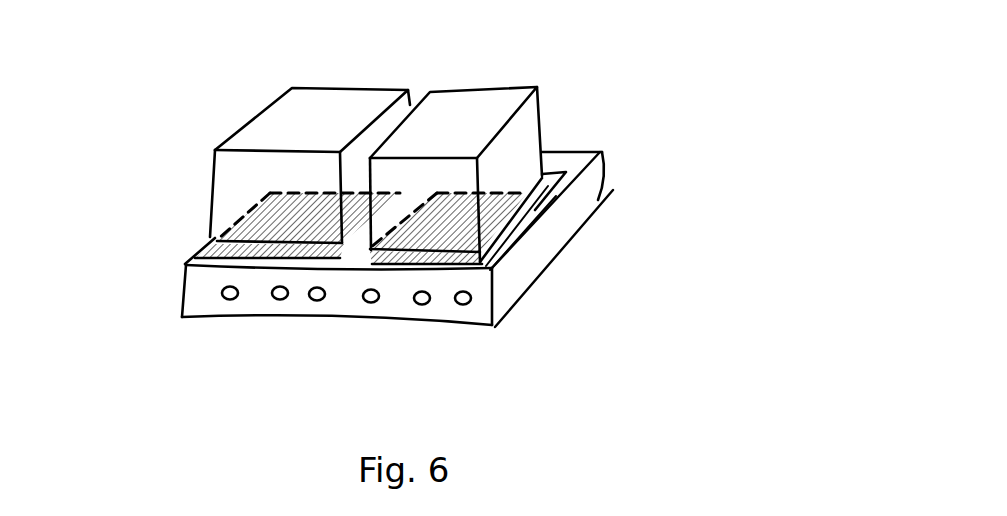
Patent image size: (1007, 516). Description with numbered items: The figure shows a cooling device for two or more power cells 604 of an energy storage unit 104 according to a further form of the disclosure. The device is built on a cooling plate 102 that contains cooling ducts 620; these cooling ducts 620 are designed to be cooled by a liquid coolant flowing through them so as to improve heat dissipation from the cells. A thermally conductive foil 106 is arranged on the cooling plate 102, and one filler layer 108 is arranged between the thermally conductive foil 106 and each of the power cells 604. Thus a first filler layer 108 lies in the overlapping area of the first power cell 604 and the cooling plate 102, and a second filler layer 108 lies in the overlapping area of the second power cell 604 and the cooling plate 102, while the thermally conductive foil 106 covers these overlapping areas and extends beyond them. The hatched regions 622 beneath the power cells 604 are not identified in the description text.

The cooling plate 102 is at (505, 292).
The energy storage unit 104 is at (572, 103).
The thermally conductive foil 106 is at (572, 183).
The filler layer 108 is at (523, 228).
The power cell 604 is at (305, 105).
The cooling duct 620 is at (222, 297).
The pads 622 is at (265, 208).